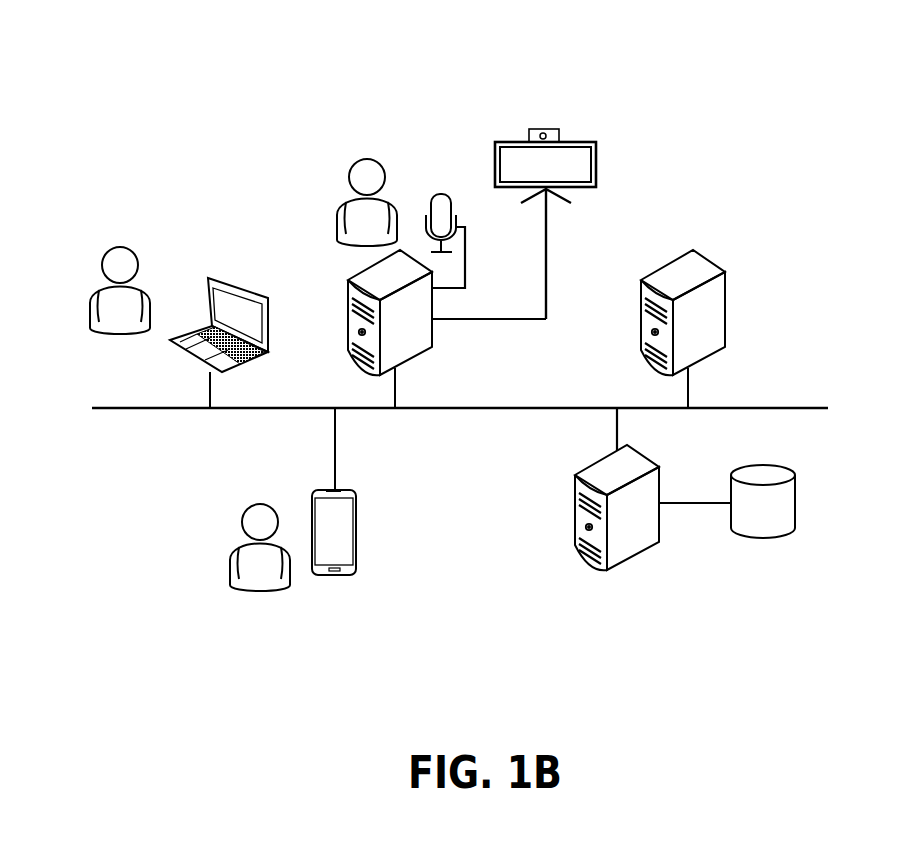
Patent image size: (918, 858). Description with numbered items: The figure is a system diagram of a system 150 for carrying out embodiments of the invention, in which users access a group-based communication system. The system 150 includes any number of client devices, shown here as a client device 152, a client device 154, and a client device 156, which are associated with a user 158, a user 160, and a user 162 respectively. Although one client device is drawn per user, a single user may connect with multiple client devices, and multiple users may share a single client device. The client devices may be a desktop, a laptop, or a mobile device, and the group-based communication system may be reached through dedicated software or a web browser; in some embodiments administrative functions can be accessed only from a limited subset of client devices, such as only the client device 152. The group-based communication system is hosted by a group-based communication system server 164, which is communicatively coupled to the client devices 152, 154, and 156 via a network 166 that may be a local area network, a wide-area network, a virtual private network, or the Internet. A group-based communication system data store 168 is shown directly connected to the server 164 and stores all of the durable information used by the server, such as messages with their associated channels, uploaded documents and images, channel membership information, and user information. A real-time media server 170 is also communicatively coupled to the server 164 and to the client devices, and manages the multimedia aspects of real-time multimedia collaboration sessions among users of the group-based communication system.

The system 150 is at (143, 99).
The client device 152 is at (232, 285).
The client device 154 is at (435, 337).
The client device 156 is at (358, 519).
The user 158 is at (131, 245).
The user 160 is at (370, 158).
The user 162 is at (246, 588).
The group-based communication system server 164 is at (627, 560).
The network 166 is at (123, 409).
The group-based communication system data store 168 is at (758, 532).
The real-time media server 170 is at (708, 257).